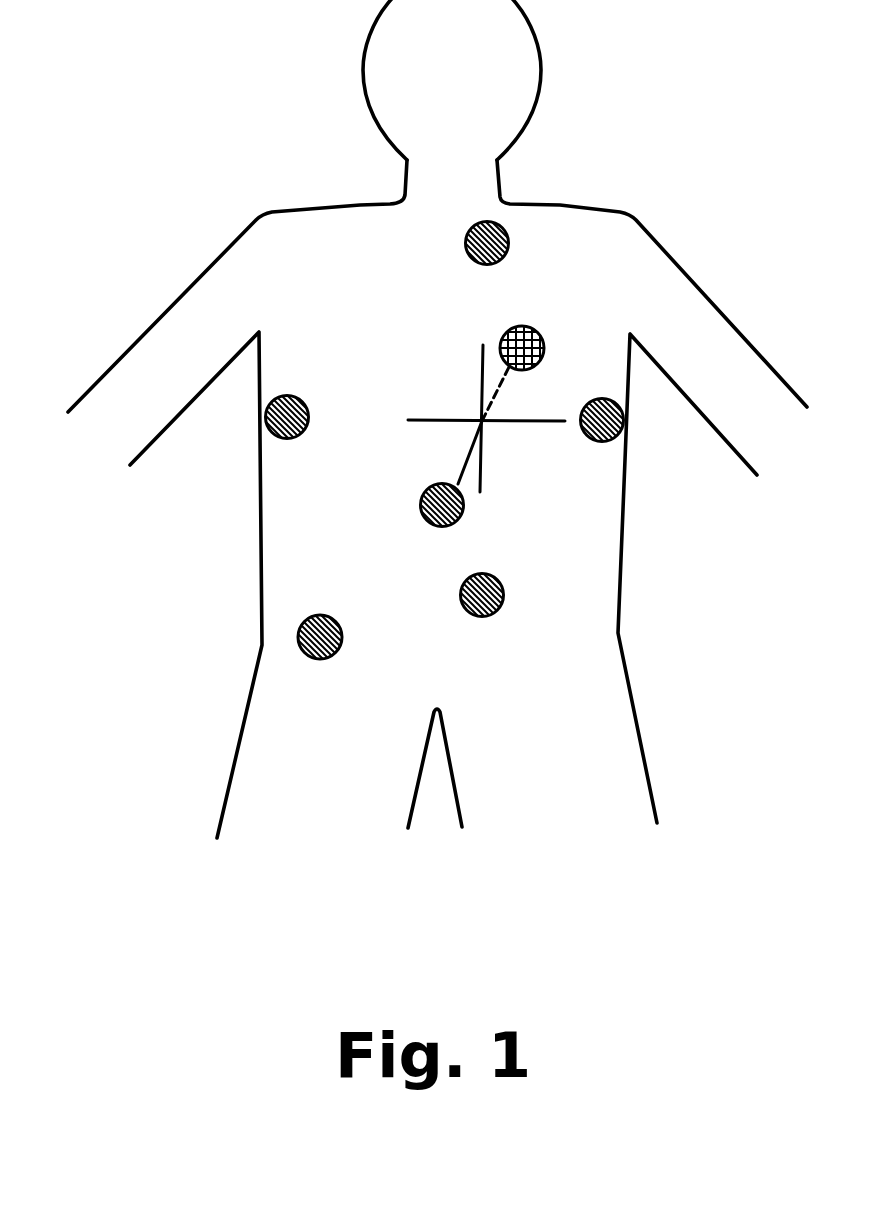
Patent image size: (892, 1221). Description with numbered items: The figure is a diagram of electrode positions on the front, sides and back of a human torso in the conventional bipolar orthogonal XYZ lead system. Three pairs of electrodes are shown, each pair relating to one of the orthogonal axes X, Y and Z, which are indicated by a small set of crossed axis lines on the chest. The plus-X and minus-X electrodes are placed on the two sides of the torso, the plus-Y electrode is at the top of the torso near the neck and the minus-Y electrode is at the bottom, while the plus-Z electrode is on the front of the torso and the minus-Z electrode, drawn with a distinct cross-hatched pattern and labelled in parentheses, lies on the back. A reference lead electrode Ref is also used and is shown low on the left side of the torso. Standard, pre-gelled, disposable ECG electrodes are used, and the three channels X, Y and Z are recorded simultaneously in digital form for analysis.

The reference lead electrode Ref is at (320, 661).